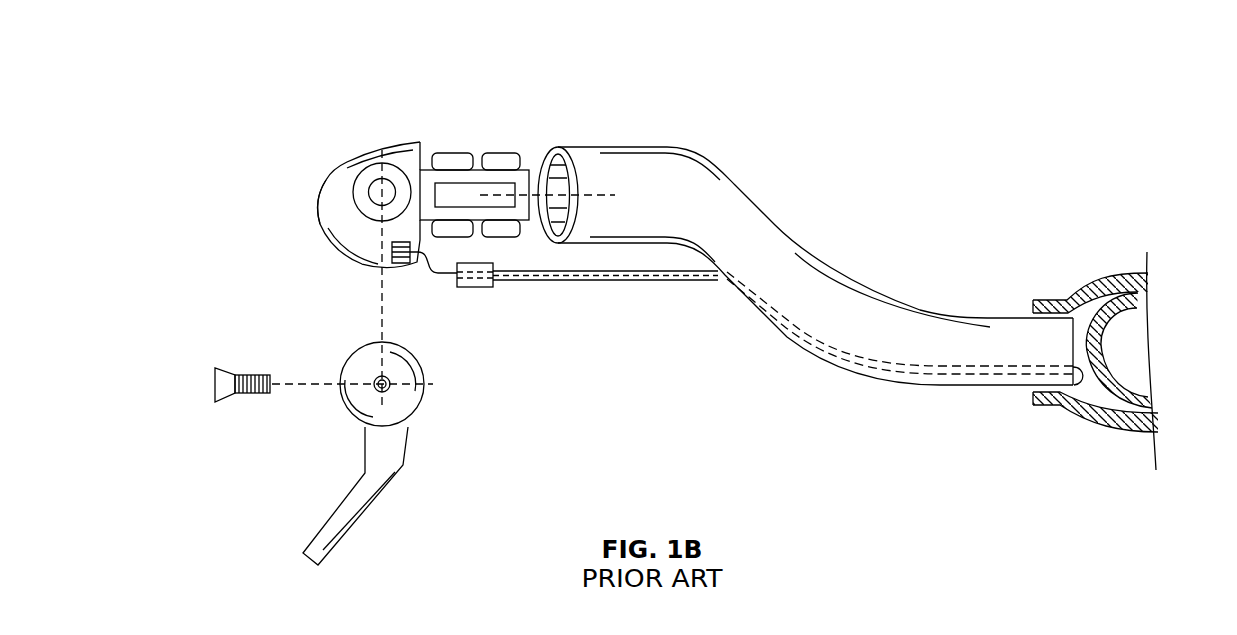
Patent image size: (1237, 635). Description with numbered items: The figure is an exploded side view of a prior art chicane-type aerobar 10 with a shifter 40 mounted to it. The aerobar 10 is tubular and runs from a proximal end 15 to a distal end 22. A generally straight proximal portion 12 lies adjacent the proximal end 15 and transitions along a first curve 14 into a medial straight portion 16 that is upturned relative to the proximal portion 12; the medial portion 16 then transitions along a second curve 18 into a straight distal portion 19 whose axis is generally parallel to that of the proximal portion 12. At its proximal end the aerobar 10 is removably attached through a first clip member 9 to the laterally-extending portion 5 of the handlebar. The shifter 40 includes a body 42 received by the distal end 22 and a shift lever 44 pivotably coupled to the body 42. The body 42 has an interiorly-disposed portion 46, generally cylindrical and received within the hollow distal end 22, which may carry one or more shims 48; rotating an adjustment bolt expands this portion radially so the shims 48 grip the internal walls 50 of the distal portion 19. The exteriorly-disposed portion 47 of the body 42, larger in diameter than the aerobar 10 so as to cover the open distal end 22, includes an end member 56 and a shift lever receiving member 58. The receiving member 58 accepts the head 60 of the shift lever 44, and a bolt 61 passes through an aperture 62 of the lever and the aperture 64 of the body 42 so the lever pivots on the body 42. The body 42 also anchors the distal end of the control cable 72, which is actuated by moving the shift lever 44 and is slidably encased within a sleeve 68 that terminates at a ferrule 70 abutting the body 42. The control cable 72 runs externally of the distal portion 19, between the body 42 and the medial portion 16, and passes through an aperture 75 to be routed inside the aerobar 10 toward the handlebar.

The laterally-extending portion 5 is at (1102, 400).
The first clip member 9 is at (1082, 423).
The aerobar 10 is at (1078, 238).
The proximal portion 12 is at (935, 297).
The first curve 14 is at (875, 285).
The proximal end 15 is at (1060, 407).
The medial straight portion 16 is at (773, 212).
The second curve 18 is at (705, 143).
The distal portion 19 is at (630, 137).
The distal end 22 is at (545, 165).
The shifter 40 is at (265, 137).
The body 42 is at (345, 115).
The shift lever 44 is at (370, 515).
The interiorly-disposed portion 46 is at (457, 145).
The exteriorly-disposed portion 47 is at (325, 177).
The shims 48 is at (437, 193).
The internal walls 50 is at (560, 147).
The end member 56 is at (398, 272).
The shift lever receiving member 58 is at (388, 168).
The head 60 is at (407, 405).
The bolt 61 is at (253, 373).
The aperture 62 is at (373, 373).
The aperture 64 is at (372, 187).
The sleeve 68 is at (546, 288).
The ferrule 70 is at (485, 290).
The control cable 72 is at (687, 278).
The aperture 75 is at (713, 270).